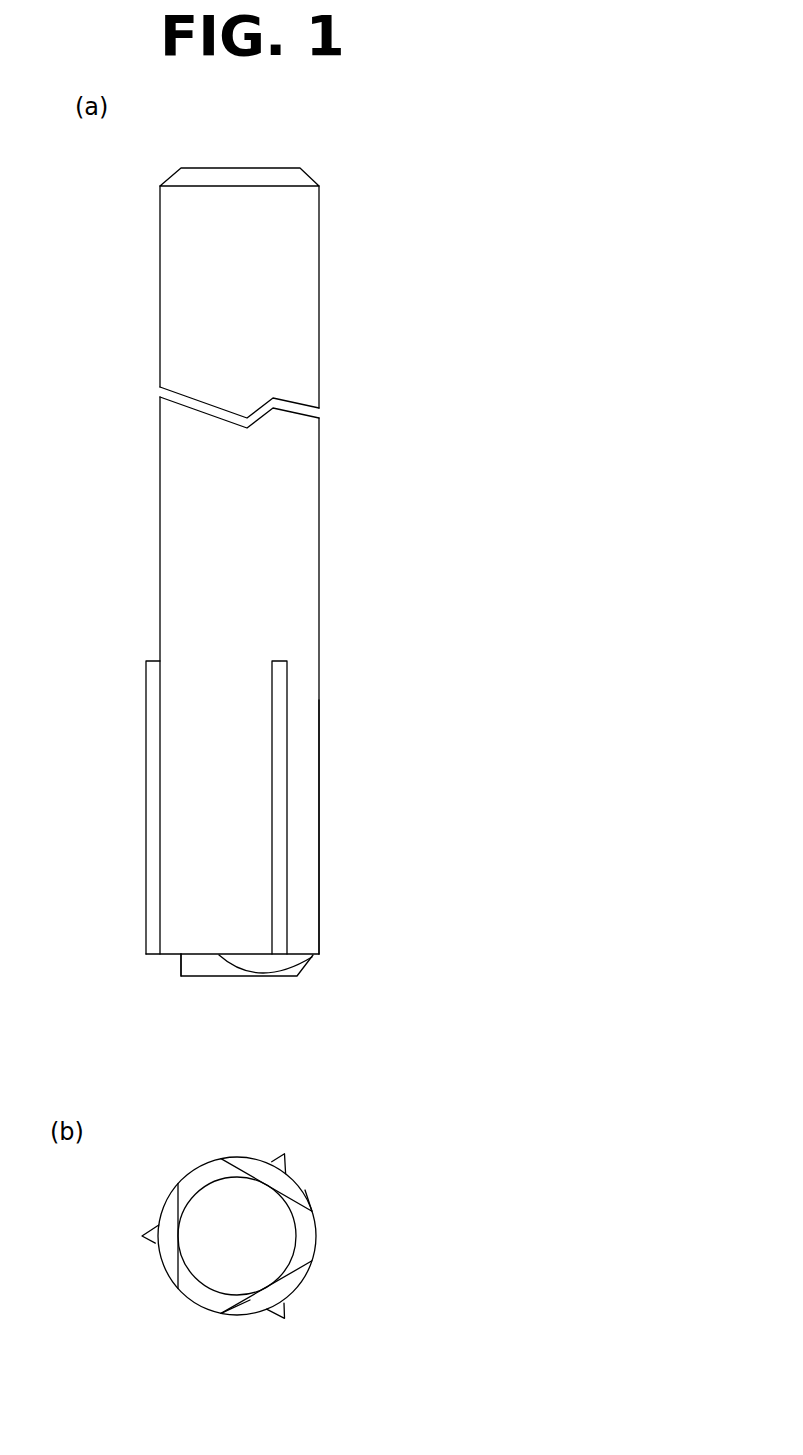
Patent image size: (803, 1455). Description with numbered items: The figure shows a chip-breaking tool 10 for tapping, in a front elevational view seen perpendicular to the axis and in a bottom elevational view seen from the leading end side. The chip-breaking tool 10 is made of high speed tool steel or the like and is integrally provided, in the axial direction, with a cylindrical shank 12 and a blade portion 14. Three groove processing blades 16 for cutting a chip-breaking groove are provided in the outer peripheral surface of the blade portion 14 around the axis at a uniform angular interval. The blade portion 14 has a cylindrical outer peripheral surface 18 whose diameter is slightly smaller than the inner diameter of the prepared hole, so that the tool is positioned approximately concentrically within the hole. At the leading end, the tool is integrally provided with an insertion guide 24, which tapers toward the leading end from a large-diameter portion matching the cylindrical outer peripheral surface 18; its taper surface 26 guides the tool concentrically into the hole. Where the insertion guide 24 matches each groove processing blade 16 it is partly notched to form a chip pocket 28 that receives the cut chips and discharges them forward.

The chip-breaking tool 10 is at (362, 215).
The shank 12 is at (178, 333).
The blade portion 14 is at (106, 944).
The groove processing blades 16 is at (154, 758).
The cylindrical outer peripheral surface 18 is at (302, 871).
The insertion guide 24 is at (302, 985).
The taper surface 26 is at (308, 968).
The chip pocket 28 is at (180, 963).